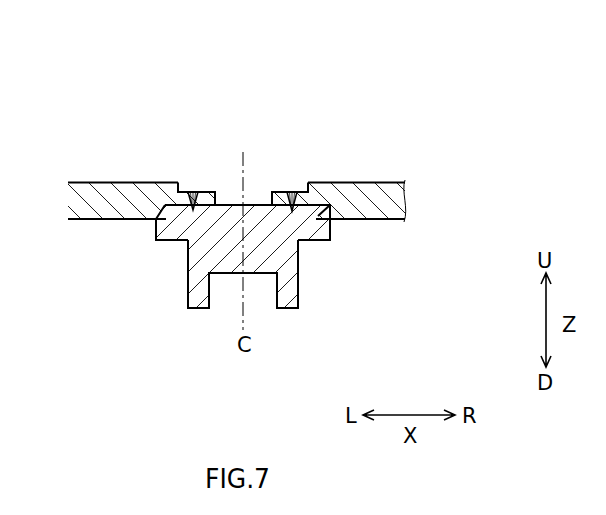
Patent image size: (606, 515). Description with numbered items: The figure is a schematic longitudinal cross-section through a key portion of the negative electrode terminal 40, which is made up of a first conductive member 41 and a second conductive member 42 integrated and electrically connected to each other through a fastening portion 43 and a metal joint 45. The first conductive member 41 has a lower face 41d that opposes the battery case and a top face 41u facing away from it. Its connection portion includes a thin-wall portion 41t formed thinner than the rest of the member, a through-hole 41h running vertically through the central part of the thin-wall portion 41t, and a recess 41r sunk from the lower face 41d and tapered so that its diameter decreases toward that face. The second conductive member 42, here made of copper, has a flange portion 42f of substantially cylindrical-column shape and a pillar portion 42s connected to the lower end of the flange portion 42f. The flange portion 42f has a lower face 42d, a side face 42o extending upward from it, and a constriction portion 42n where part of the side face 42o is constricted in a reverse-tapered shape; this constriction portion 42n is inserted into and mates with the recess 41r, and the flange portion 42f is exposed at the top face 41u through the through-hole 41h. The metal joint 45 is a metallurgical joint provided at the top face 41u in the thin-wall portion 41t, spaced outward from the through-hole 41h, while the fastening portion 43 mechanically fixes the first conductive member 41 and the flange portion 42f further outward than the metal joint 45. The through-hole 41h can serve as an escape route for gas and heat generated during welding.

The negative electrode terminal 40 is at (237, 197).
The first conductive member 41 is at (228, 196).
The top face 41u is at (93, 181).
The lower face 41d is at (92, 221).
The through-hole 41h is at (268, 195).
The thin-wall portion 41t is at (299, 189).
The recess 41r is at (170, 210).
The second conductive member 42 is at (247, 286).
The flange portion 42f is at (182, 233).
The constriction portion 42n is at (334, 222).
The side face 42o is at (333, 236).
The lower face 42d is at (306, 241).
The pillar portion 42s is at (280, 284).
The fastening portion 43 is at (153, 189).
The metal joint 45 is at (190, 182).